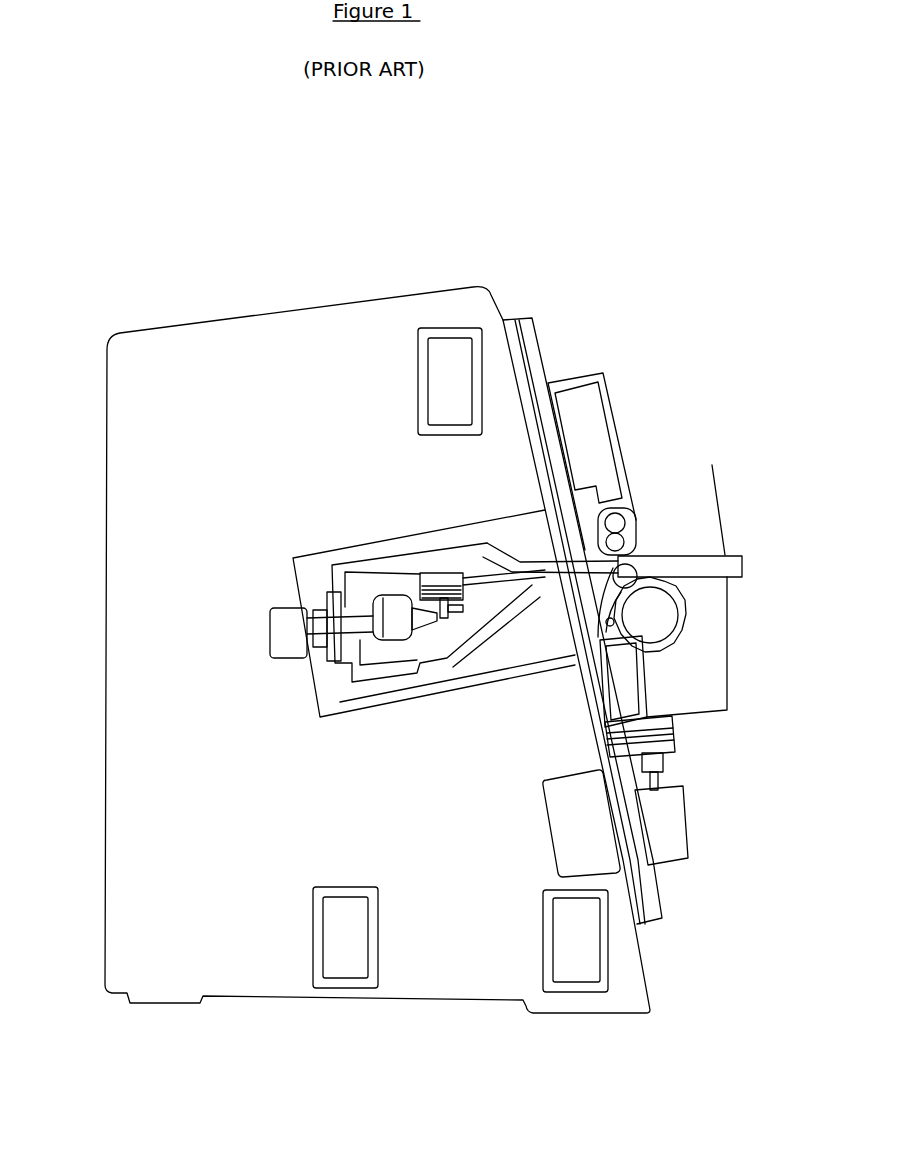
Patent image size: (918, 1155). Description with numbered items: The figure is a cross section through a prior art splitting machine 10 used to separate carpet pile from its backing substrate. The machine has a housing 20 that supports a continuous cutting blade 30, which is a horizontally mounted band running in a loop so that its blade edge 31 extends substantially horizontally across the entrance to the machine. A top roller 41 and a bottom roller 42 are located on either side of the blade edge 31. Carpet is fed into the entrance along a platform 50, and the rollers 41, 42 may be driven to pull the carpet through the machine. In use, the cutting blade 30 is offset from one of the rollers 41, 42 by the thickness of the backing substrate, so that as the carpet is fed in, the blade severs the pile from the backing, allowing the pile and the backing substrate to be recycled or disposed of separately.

The splitting machine 10 is at (80, 206).
The housing 20 is at (225, 752).
The continuous cutting blade 30 is at (530, 570).
The blade edge 31 is at (622, 558).
The top roller 41 is at (622, 515).
The bottom roller 42 is at (628, 578).
The platform 50 is at (714, 568).